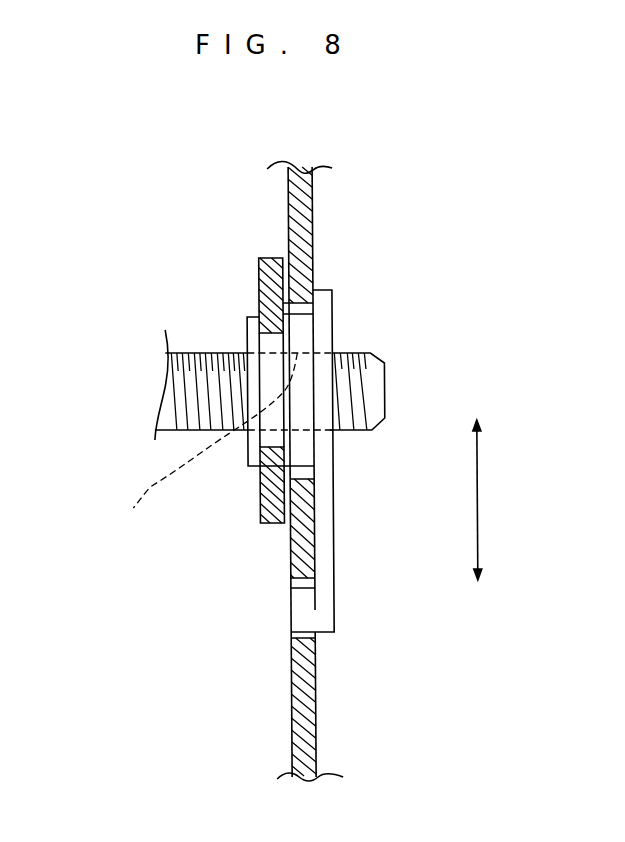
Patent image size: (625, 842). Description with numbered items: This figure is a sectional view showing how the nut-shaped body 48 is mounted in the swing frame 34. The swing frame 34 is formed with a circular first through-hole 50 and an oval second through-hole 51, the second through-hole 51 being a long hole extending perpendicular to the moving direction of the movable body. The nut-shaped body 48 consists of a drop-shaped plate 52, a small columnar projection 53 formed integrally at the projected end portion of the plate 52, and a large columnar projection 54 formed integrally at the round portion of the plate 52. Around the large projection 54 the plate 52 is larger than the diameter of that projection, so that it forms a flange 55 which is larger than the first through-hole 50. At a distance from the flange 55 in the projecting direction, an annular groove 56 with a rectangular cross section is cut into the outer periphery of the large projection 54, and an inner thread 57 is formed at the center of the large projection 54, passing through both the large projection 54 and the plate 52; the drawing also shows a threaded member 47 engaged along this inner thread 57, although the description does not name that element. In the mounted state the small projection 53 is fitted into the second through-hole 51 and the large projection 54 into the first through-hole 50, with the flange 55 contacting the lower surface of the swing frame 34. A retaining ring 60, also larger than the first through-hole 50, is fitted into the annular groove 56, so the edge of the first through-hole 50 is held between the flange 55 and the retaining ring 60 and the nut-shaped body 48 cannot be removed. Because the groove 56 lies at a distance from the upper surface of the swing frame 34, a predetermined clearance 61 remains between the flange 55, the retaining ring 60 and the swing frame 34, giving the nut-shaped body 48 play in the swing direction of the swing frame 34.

The swing frame 34 is at (307, 708).
The threaded shaft (adjusting screw) 47 is at (382, 387).
The nut-shaped body 48 is at (347, 561).
The first through-hole 50 is at (282, 305).
The second through-hole 51 is at (302, 639).
The plate 52 is at (327, 498).
The small columnar projection 53 is at (303, 610).
The large columnar projection 54 is at (298, 330).
The flange 55 is at (322, 289).
The annular groove 56 is at (268, 342).
The inner thread 57 is at (206, 449).
The retaining ring 60 is at (265, 258).
The clearance 61 is at (287, 527).